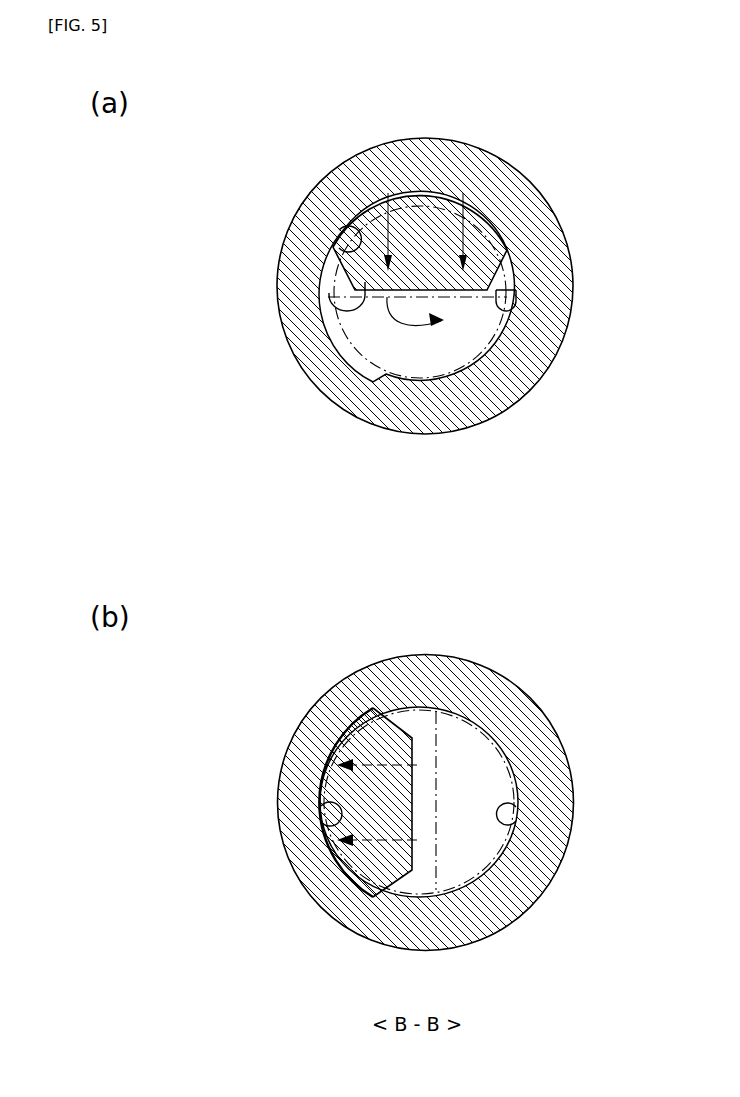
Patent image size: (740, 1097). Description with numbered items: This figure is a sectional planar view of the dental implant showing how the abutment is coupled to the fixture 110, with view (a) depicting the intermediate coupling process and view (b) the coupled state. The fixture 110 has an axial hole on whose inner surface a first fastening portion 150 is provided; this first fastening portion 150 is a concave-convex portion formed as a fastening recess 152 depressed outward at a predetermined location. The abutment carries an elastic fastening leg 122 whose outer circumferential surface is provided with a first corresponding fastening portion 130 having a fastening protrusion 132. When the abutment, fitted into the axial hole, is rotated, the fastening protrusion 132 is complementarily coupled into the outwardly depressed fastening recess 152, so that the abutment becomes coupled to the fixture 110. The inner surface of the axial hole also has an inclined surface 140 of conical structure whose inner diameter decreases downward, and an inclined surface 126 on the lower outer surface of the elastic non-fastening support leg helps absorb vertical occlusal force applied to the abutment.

The fixture 110 is at (532, 210).
The elastic fastening leg 122 is at (328, 294).
The inclined surface 126 is at (483, 330).
The first corresponding fastening portion 130 is at (323, 528).
The fastening protrusion 132 is at (385, 196).
The inclined surface 140 is at (510, 291).
The first fastening portion 150 is at (250, 520).
The fastening recess 152 is at (355, 245).